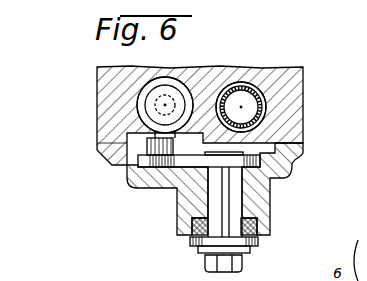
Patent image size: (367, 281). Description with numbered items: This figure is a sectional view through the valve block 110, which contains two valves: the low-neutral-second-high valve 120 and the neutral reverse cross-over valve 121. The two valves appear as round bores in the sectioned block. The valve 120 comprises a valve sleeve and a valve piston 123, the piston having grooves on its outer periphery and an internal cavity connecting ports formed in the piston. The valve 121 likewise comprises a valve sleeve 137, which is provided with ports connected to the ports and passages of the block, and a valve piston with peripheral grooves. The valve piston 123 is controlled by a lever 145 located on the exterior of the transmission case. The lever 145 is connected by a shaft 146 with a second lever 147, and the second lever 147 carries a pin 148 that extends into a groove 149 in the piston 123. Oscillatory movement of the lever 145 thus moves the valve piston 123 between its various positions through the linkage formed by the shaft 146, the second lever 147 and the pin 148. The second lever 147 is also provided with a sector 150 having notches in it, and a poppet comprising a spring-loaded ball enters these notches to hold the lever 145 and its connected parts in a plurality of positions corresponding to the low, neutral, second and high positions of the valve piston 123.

The valve block 110 is at (309, 71).
The low-neutral-second-high valve 120 is at (133, 96).
The neutral reverse cross-over valve 121 is at (266, 107).
The valve piston 123 is at (150, 104).
The valve sleeve 137 is at (262, 96).
The lever 145 is at (261, 242).
The shaft 146 is at (227, 200).
The second lever 147 is at (260, 163).
The pin 148 is at (116, 157).
The groove 149 is at (147, 126).
The sector 150 is at (177, 182).